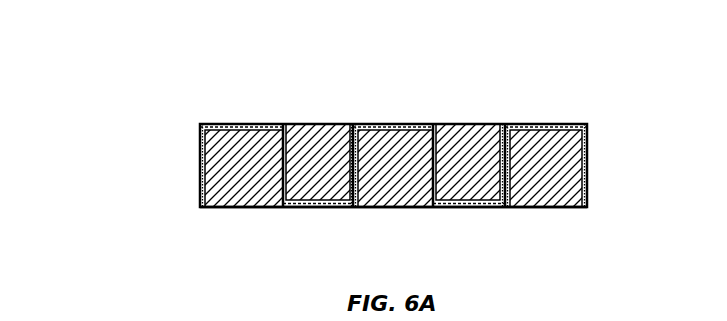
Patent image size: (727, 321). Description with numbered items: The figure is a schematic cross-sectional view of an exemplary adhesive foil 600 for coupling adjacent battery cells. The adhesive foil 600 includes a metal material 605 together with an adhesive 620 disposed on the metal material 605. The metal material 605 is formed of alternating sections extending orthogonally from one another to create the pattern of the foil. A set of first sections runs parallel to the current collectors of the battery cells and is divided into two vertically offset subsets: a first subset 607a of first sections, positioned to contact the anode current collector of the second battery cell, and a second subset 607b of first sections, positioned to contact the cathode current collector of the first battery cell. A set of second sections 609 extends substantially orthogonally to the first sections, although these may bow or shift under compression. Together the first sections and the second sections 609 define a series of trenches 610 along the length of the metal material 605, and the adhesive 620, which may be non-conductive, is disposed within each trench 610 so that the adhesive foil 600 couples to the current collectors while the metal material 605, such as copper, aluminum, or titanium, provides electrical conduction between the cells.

The adhesive foil 600 is at (85, 93).
The metal material 605 is at (587, 153).
The first subset of first sections 607a is at (390, 125).
The second subset of first sections 607b is at (337, 205).
The second sections 609 is at (445, 137).
The trenches 610 is at (540, 127).
The adhesive 620 is at (553, 207).